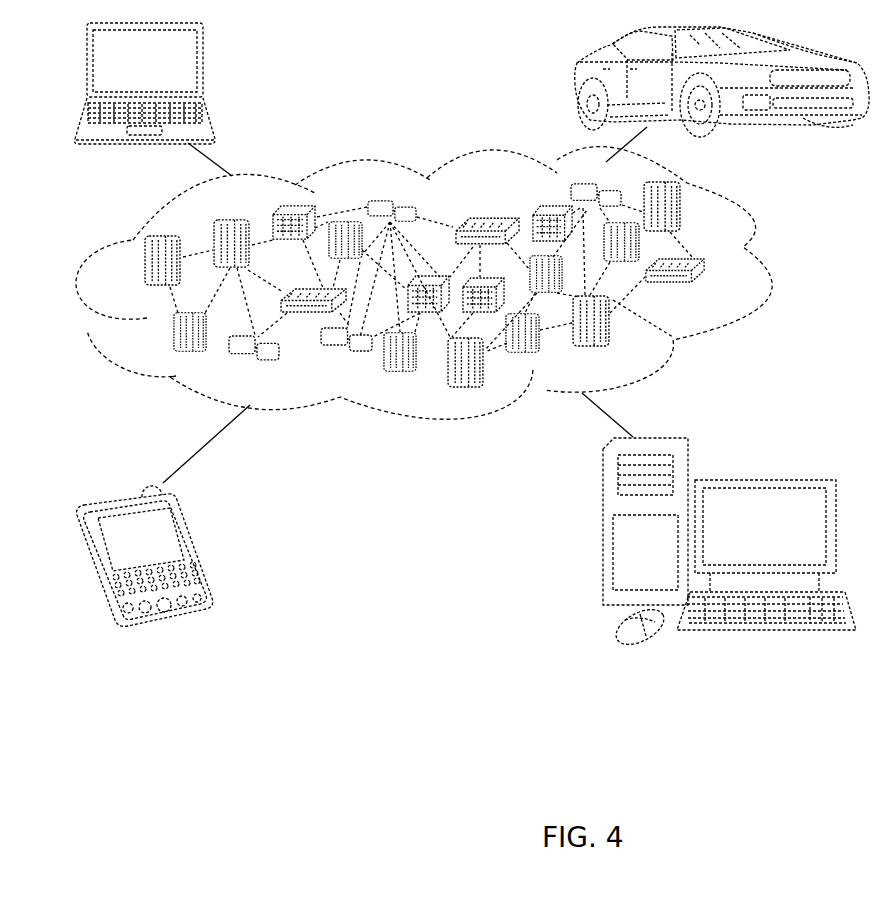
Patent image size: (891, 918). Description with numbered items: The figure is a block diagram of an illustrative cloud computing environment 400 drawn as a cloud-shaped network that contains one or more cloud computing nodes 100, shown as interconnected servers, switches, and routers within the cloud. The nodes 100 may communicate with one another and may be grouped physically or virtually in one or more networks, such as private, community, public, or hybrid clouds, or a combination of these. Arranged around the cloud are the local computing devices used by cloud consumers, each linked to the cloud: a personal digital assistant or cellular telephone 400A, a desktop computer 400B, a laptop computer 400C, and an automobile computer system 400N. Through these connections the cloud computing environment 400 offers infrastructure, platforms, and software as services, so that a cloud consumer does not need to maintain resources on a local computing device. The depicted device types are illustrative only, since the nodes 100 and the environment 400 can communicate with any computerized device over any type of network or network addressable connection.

The cloud computing node 100 is at (720, 295).
The cloud computing environment 400 is at (452, 283).
The personal digital assistant or cellular telephone 400A is at (198, 548).
The desktop computer 400B is at (762, 480).
The laptop computer 400C is at (203, 71).
The automobile computer system 400N is at (577, 82).